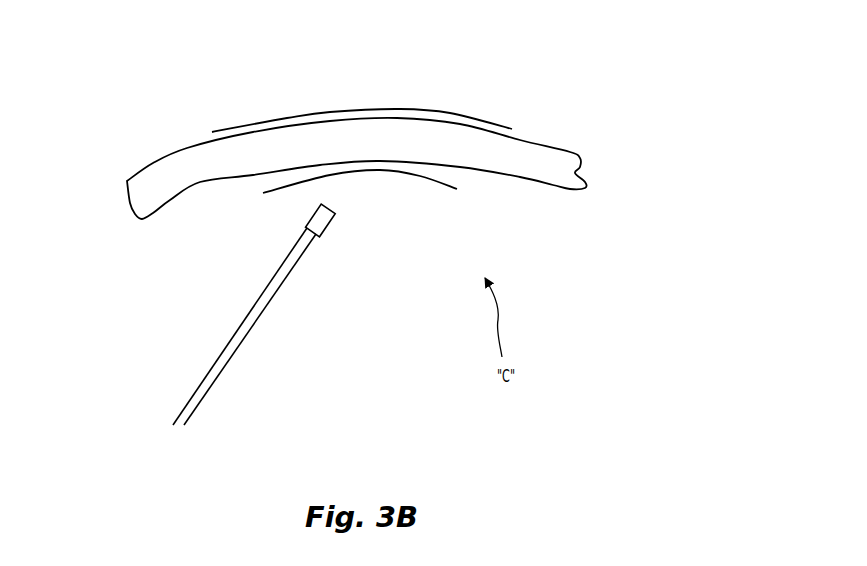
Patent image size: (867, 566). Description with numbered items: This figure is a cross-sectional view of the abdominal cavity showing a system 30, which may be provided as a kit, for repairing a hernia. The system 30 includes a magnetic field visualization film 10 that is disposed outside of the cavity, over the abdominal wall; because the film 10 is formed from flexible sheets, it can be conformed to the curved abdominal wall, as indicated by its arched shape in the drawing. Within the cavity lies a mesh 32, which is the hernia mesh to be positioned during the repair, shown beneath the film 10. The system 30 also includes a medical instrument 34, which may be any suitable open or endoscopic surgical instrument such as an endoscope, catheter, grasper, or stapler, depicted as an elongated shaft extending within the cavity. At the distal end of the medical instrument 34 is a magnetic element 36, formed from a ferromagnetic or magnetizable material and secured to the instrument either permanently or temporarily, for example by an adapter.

The system 30 is at (134, 86).
The film 10 is at (405, 107).
The mesh 32 is at (415, 173).
The medical instrument 34 is at (227, 362).
The magnetic element 36 is at (309, 219).